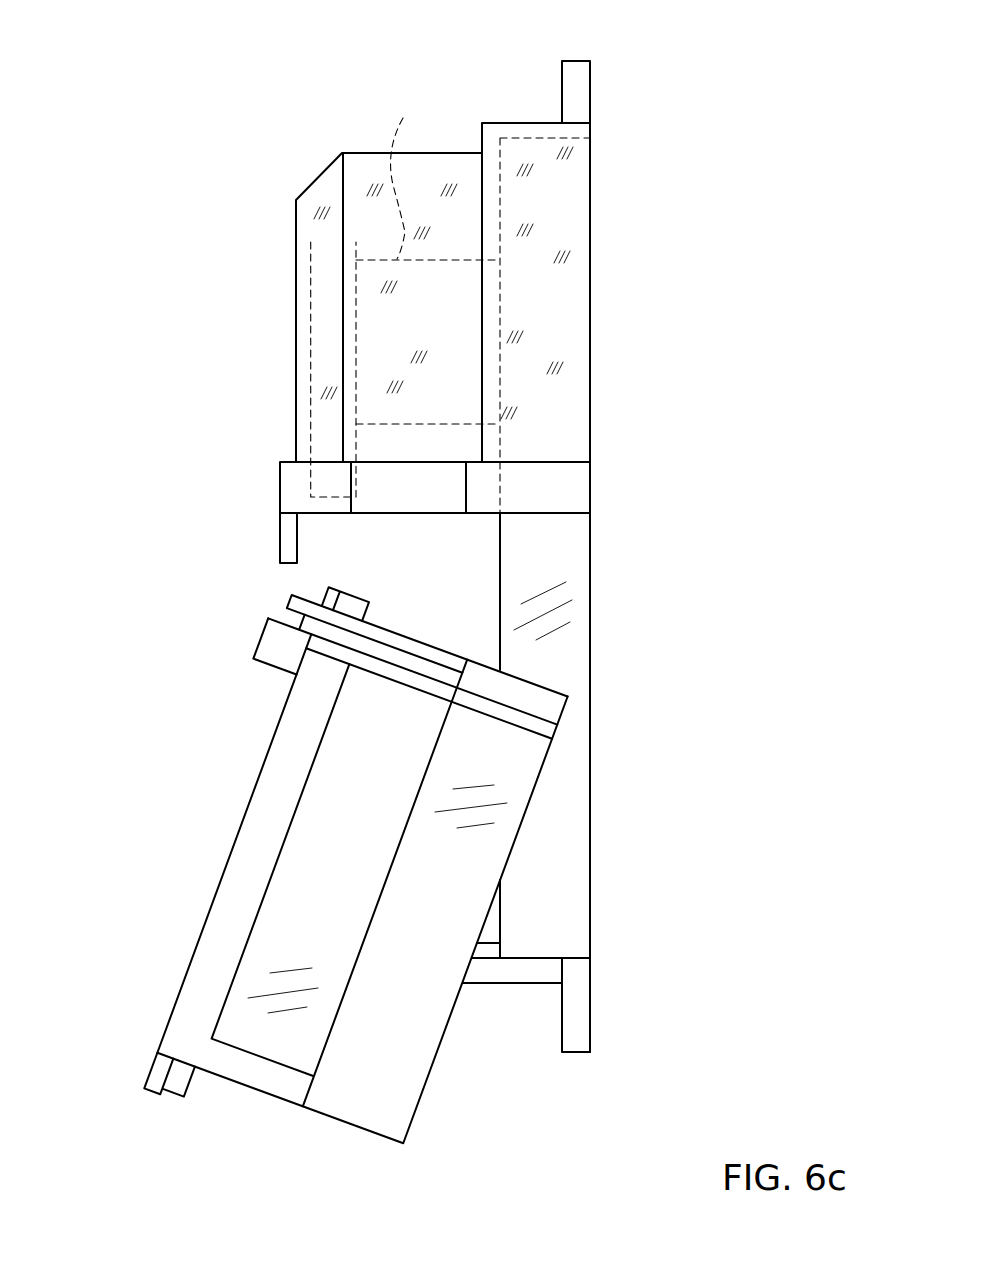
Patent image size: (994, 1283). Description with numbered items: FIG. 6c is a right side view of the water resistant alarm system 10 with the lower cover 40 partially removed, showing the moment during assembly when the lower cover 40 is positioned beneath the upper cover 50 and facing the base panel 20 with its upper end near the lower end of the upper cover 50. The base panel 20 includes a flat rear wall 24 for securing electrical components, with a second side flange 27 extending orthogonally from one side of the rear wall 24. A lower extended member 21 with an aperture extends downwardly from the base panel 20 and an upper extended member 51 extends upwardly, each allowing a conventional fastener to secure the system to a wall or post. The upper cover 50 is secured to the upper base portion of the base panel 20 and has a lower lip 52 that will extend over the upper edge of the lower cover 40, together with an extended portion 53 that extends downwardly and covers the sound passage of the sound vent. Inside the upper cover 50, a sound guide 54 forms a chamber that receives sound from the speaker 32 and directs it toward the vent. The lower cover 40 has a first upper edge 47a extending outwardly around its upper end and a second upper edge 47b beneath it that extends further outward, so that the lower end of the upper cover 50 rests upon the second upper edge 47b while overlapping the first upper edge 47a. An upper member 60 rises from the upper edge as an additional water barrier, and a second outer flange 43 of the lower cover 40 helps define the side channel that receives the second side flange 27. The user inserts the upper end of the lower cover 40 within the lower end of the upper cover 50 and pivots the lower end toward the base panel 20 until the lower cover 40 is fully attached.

The water resistant alarm system 10 is at (152, 100).
The base panel 20 is at (602, 656).
The lower extended member 21 is at (577, 1053).
The rear wall 24 is at (592, 865).
The second side flange 27 is at (553, 542).
The speaker 32 is at (424, 181).
The lower cover 40 is at (214, 867).
The second outer flange 43 is at (545, 704).
The first upper edge 47a is at (400, 628).
The second upper edge 47b is at (505, 728).
The upper cover 50 is at (286, 222).
The upper extended member 51 is at (577, 60).
The lower lip 52 is at (280, 485).
The extended portion 53 is at (285, 566).
The sound guide 54 is at (310, 338).
The upper member 60 is at (348, 590).